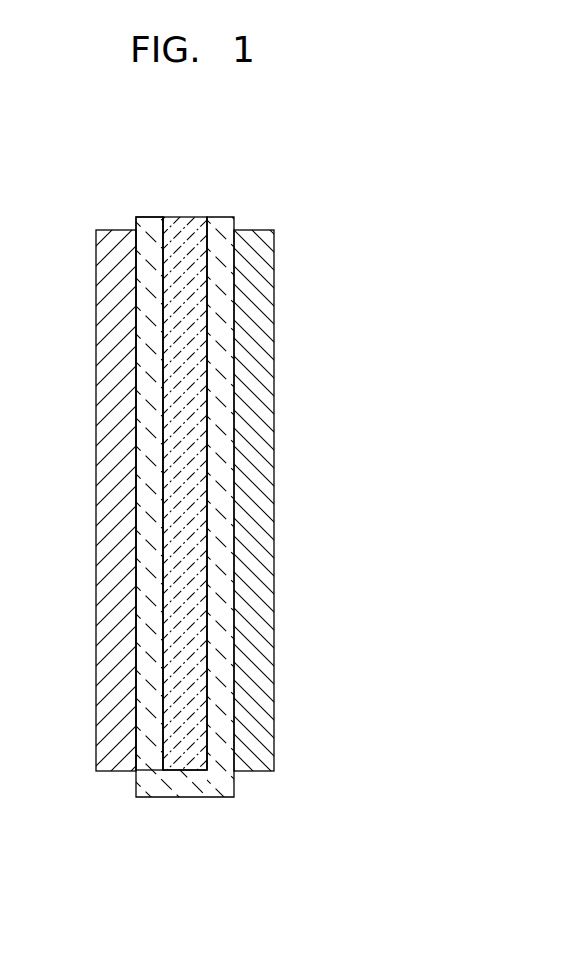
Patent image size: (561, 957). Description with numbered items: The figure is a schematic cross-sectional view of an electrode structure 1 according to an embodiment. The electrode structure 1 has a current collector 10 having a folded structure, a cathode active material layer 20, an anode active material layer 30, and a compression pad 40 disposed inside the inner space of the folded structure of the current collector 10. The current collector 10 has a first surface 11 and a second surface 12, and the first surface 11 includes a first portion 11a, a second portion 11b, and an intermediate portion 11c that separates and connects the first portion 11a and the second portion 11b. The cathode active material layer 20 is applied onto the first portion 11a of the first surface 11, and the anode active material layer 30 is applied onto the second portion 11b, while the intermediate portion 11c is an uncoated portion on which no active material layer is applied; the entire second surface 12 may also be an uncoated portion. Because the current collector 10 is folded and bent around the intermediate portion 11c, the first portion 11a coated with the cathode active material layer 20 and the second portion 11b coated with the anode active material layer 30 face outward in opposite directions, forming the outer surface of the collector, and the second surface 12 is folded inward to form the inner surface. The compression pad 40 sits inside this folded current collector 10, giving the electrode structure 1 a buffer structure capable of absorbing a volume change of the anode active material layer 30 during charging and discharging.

The electrode structure 1 is at (338, 188).
The current collector 10 is at (152, 225).
The first surface 11 is at (265, 865).
The first portion 11a is at (137, 733).
The second portion 11b is at (235, 733).
The intermediate portion 11c is at (188, 798).
The second surface 12 is at (208, 670).
The cathode active material layer 20 is at (118, 232).
The anode active material layer 30 is at (255, 232).
The compression pad 40 is at (187, 227).